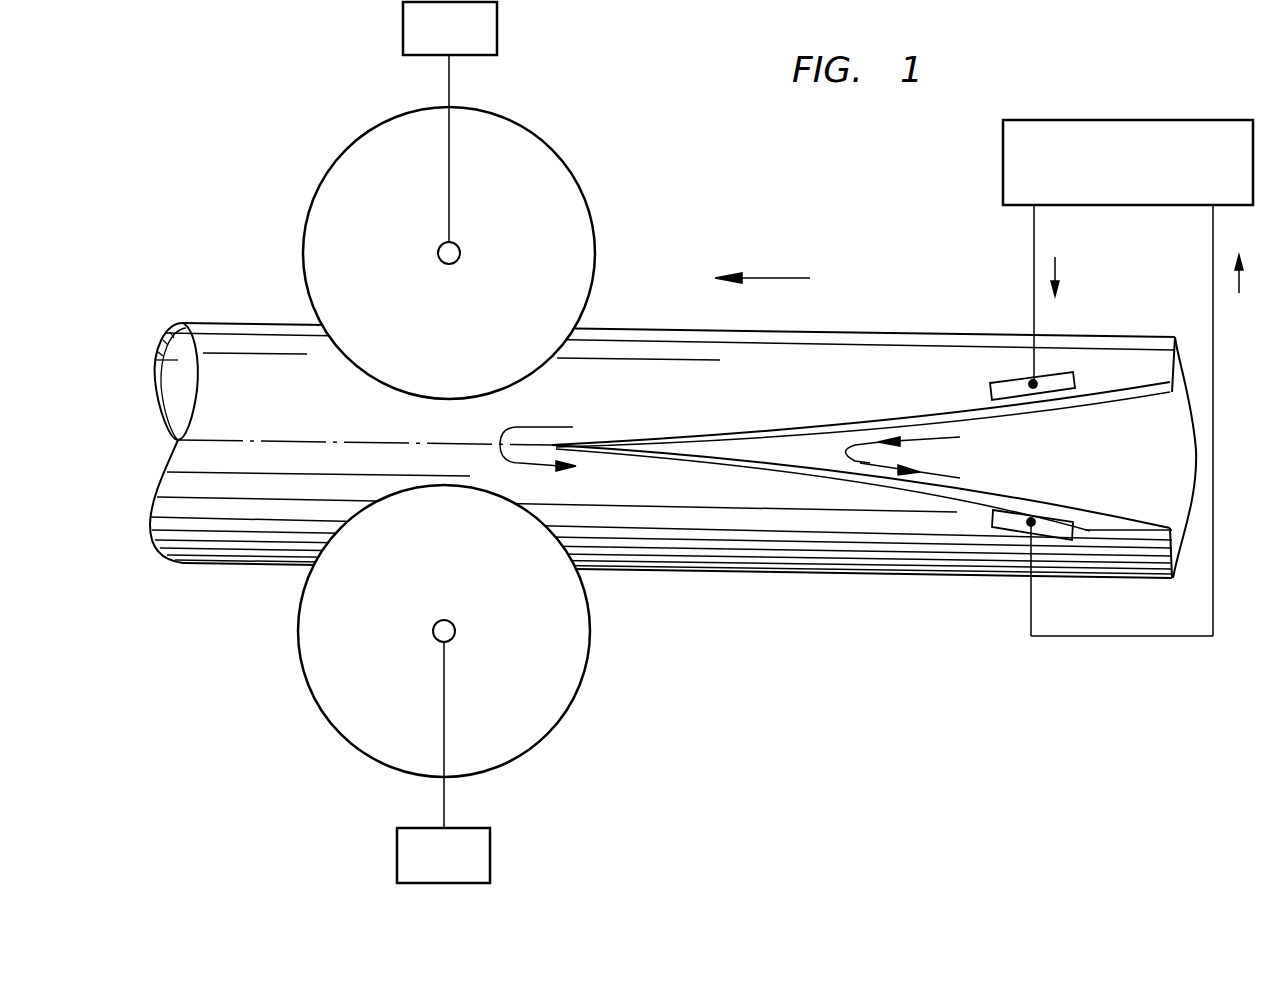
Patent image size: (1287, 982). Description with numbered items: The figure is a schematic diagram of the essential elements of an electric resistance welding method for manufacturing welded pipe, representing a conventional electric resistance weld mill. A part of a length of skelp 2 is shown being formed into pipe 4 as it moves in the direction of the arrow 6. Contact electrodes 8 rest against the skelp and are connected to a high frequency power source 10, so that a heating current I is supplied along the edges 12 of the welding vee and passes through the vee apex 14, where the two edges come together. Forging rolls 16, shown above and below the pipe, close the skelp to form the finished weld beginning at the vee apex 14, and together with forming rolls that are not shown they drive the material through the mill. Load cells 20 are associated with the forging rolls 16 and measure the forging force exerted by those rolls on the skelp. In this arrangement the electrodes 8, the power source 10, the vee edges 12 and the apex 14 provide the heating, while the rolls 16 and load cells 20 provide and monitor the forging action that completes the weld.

The skelp 2 is at (1155, 334).
The pipe 4 is at (215, 323).
The arrow 6 is at (764, 278).
The contact electrodes 8 is at (994, 384).
The high frequency power source 10 is at (1180, 120).
The edges of the welding vee 12 is at (766, 432).
The vee apex 14 is at (543, 447).
The forging rolls 16 is at (572, 170).
The load cells 20 is at (498, 34).